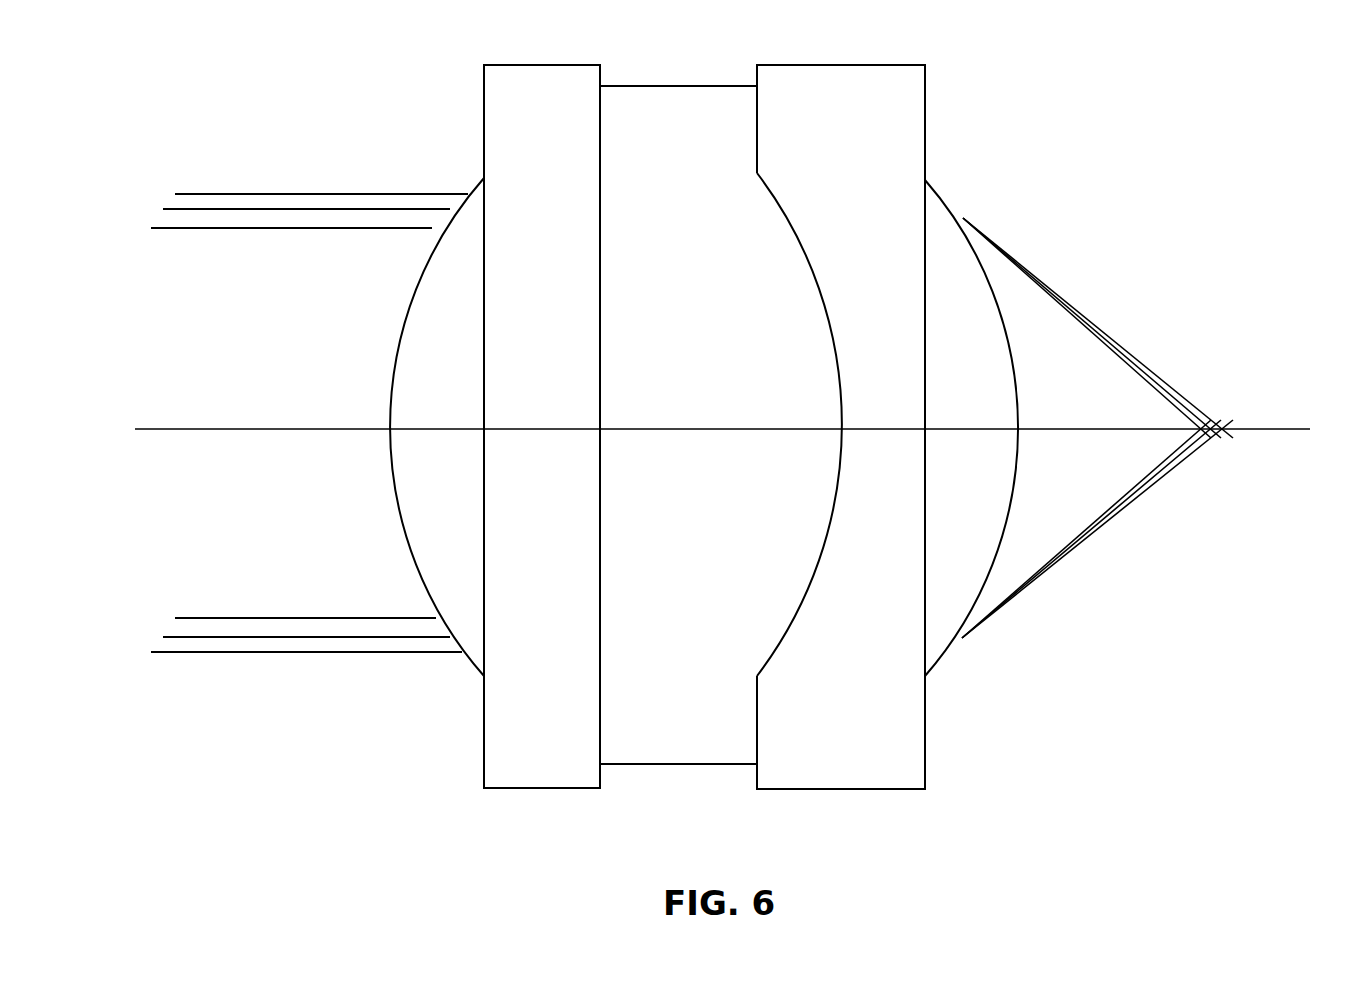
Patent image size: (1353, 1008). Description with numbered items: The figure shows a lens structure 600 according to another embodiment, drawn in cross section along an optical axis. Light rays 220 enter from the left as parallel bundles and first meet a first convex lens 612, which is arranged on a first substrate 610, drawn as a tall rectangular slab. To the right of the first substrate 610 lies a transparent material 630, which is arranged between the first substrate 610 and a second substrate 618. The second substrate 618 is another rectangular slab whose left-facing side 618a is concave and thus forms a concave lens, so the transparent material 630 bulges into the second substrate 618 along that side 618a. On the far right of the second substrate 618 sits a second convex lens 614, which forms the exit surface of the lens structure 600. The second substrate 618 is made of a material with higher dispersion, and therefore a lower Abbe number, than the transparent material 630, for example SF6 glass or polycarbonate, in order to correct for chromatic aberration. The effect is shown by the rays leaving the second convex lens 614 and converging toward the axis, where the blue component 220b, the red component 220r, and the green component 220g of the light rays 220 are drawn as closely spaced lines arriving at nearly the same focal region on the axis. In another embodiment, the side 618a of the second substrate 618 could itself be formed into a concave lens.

The lens structure 600 is at (722, 231).
The light rays 220 is at (268, 194).
The first convex lens 612 is at (470, 359).
The first substrate 610 is at (571, 359).
The transparent material 630 is at (735, 359).
The second substrate 618 is at (910, 359).
The side of the second substrate 618a is at (833, 512).
The second convex lens 614 is at (998, 359).
The blue component 220b is at (1077, 313).
The red component 220r is at (1135, 360).
The green component 220g is at (1198, 413).